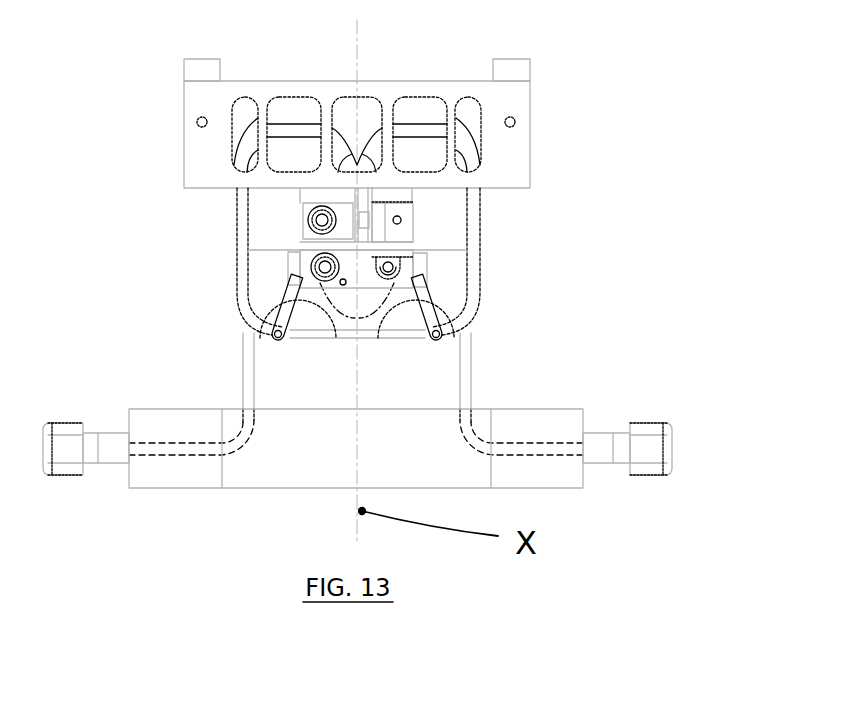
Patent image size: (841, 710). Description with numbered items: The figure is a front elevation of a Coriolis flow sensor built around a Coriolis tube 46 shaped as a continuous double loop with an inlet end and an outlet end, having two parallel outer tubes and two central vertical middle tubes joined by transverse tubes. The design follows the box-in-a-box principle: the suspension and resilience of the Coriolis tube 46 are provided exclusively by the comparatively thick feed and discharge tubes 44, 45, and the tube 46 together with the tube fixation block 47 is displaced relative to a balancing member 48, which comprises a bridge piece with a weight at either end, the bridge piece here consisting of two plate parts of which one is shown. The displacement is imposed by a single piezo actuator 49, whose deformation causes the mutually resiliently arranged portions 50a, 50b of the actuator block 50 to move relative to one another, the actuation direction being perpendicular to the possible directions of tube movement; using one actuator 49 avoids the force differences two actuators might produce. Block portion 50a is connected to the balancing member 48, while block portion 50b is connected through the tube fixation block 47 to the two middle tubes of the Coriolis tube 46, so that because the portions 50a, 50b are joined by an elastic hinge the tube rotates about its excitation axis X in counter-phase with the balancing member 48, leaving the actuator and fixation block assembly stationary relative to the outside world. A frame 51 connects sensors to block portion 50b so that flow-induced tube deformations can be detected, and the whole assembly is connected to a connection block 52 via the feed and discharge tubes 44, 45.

The feed tube 44 is at (251, 383).
The discharge tube 45 is at (462, 383).
The Coriolis tube 46 is at (463, 310).
The tube fixation block 47 is at (418, 260).
The balancing member 48 is at (498, 139).
The piezo actuator 49 is at (354, 223).
The actuator block 50 is at (347, 247).
The actuator block portion 50a is at (303, 224).
The actuator block portion 50b is at (392, 209).
The frame 51 is at (410, 297).
The connection block 52 is at (569, 474).